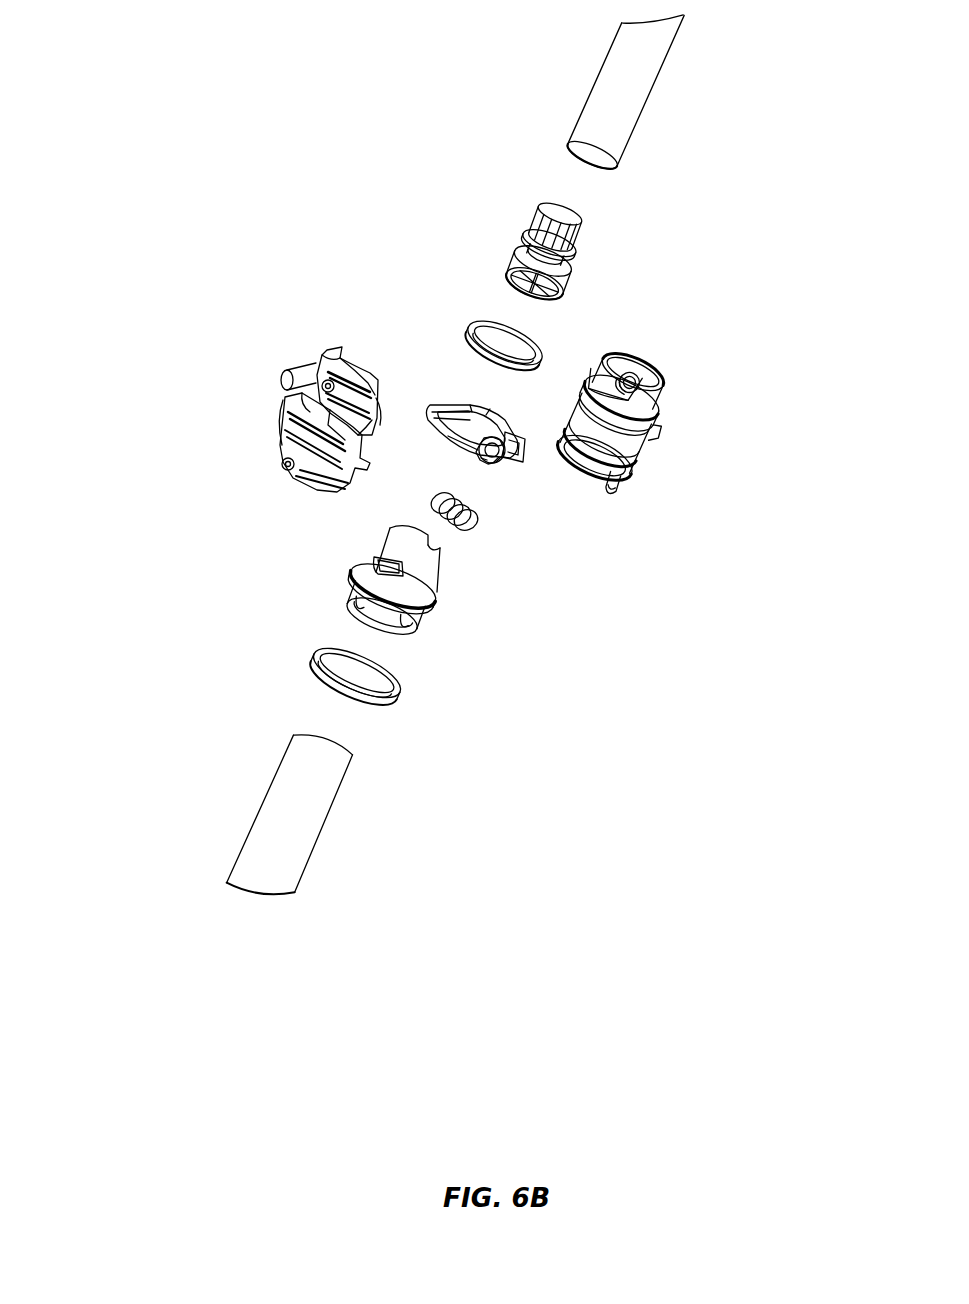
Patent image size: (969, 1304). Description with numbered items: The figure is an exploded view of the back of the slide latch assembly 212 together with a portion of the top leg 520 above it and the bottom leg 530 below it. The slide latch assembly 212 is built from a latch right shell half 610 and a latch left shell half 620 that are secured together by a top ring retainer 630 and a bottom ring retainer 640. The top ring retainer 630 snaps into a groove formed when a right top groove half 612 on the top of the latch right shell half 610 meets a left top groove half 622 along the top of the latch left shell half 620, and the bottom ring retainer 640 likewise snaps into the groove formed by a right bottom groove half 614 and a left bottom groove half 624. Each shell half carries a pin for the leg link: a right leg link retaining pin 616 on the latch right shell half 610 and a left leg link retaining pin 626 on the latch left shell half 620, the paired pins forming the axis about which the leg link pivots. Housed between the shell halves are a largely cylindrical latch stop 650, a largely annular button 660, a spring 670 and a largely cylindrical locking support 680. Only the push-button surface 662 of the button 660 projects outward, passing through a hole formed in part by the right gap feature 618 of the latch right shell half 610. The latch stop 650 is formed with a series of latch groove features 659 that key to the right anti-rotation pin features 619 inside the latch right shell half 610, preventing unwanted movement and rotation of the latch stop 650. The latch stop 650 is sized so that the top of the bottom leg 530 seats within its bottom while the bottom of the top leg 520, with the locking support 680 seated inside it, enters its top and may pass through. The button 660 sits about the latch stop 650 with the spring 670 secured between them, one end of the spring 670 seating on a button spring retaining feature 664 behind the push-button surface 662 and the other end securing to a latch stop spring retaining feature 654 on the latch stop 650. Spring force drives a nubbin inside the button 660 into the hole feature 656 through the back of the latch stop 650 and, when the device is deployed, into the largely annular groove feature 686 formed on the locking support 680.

The slide latch assembly 212 is at (142, 383).
The top leg 520 is at (628, 102).
The bottom leg 530 is at (320, 815).
The latch right shell half 610 is at (302, 393).
The right top groove half 612 is at (322, 352).
The right bottom groove half 614 is at (283, 455).
The right leg link retaining pin 616 is at (277, 383).
The right gap feature 618 is at (383, 410).
The right anti-rotation pin features 619 is at (345, 350).
The latch left shell half 620 is at (661, 415).
The left top groove half 622 is at (650, 373).
The left bottom groove half 624 is at (665, 508).
The left leg link retaining pin 626 is at (642, 383).
The top ring retainer 630 is at (545, 346).
The bottom ring retainer 640 is at (400, 690).
The latch stop 650 is at (402, 582).
The latch stop spring retaining feature 654 is at (437, 588).
The hole feature 656 is at (385, 570).
The latch groove features 659 is at (298, 595).
The button 660 is at (479, 450).
The push-button surface 662 is at (520, 465).
The button spring retaining feature 664 is at (470, 455).
The spring 670 is at (480, 518).
The locking support 680 is at (564, 243).
The groove feature 686 is at (522, 246).